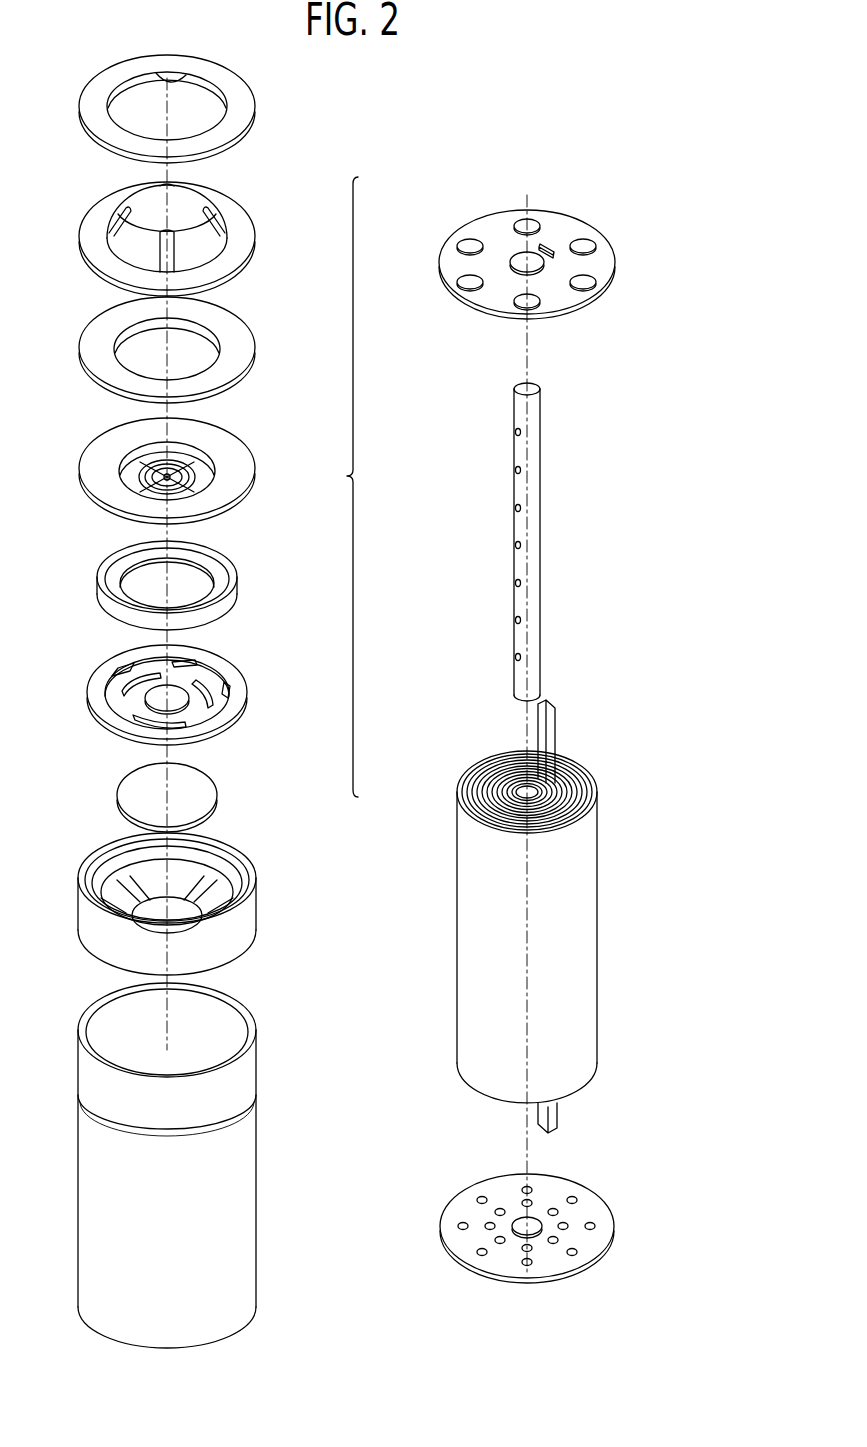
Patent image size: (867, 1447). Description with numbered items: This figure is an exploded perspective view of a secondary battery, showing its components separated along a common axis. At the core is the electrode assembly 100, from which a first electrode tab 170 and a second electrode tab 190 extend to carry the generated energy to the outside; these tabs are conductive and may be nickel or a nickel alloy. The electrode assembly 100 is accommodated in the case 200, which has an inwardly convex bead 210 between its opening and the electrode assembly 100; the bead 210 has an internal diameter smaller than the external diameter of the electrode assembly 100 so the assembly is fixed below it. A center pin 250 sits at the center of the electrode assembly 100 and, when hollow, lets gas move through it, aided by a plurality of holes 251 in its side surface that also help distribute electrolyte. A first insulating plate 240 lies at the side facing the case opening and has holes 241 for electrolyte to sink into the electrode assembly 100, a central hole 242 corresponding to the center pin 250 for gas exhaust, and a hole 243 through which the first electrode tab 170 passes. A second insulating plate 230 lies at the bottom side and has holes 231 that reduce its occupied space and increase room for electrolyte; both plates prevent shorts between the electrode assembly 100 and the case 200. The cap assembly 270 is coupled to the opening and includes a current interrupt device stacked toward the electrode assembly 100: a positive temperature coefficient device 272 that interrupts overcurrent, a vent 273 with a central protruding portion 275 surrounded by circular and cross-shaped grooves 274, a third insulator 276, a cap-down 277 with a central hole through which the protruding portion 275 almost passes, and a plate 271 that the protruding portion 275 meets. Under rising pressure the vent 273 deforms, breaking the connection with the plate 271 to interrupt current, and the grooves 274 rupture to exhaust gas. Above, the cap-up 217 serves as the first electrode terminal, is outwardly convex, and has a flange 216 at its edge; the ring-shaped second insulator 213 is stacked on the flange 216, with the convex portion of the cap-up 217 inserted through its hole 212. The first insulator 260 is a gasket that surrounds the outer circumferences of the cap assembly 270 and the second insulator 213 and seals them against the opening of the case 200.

The electrode assembly 100 is at (602, 925).
The first electrode tab 170 is at (551, 735).
The second electrode tab 190 is at (558, 1115).
The case 200 is at (250, 1208).
The bead 210 is at (250, 1095).
The opening 212 is at (178, 82).
The second insulator 213 is at (250, 104).
The flange 216 is at (250, 236).
The cap-up 217 is at (190, 205).
The second insulating plate 230 is at (588, 1212).
The openings 231 is at (575, 1251).
The first insulating plate 240 is at (605, 262).
The openings 241 is at (585, 241).
The opening 242 is at (517, 258).
The opening 243 is at (548, 248).
The center pin 250 is at (535, 527).
The openings 251 is at (521, 469).
The first insulator 260 is at (250, 915).
The cap assembly 270 is at (347, 476).
The plate 271 is at (212, 790).
The positive temperature coefficient device 272 is at (250, 348).
The vent 273 is at (236, 470).
The grooves 274 is at (170, 466).
The protruding portion 275 is at (164, 474).
The third insulator 276 is at (236, 582).
The cap-down 277 is at (240, 692).